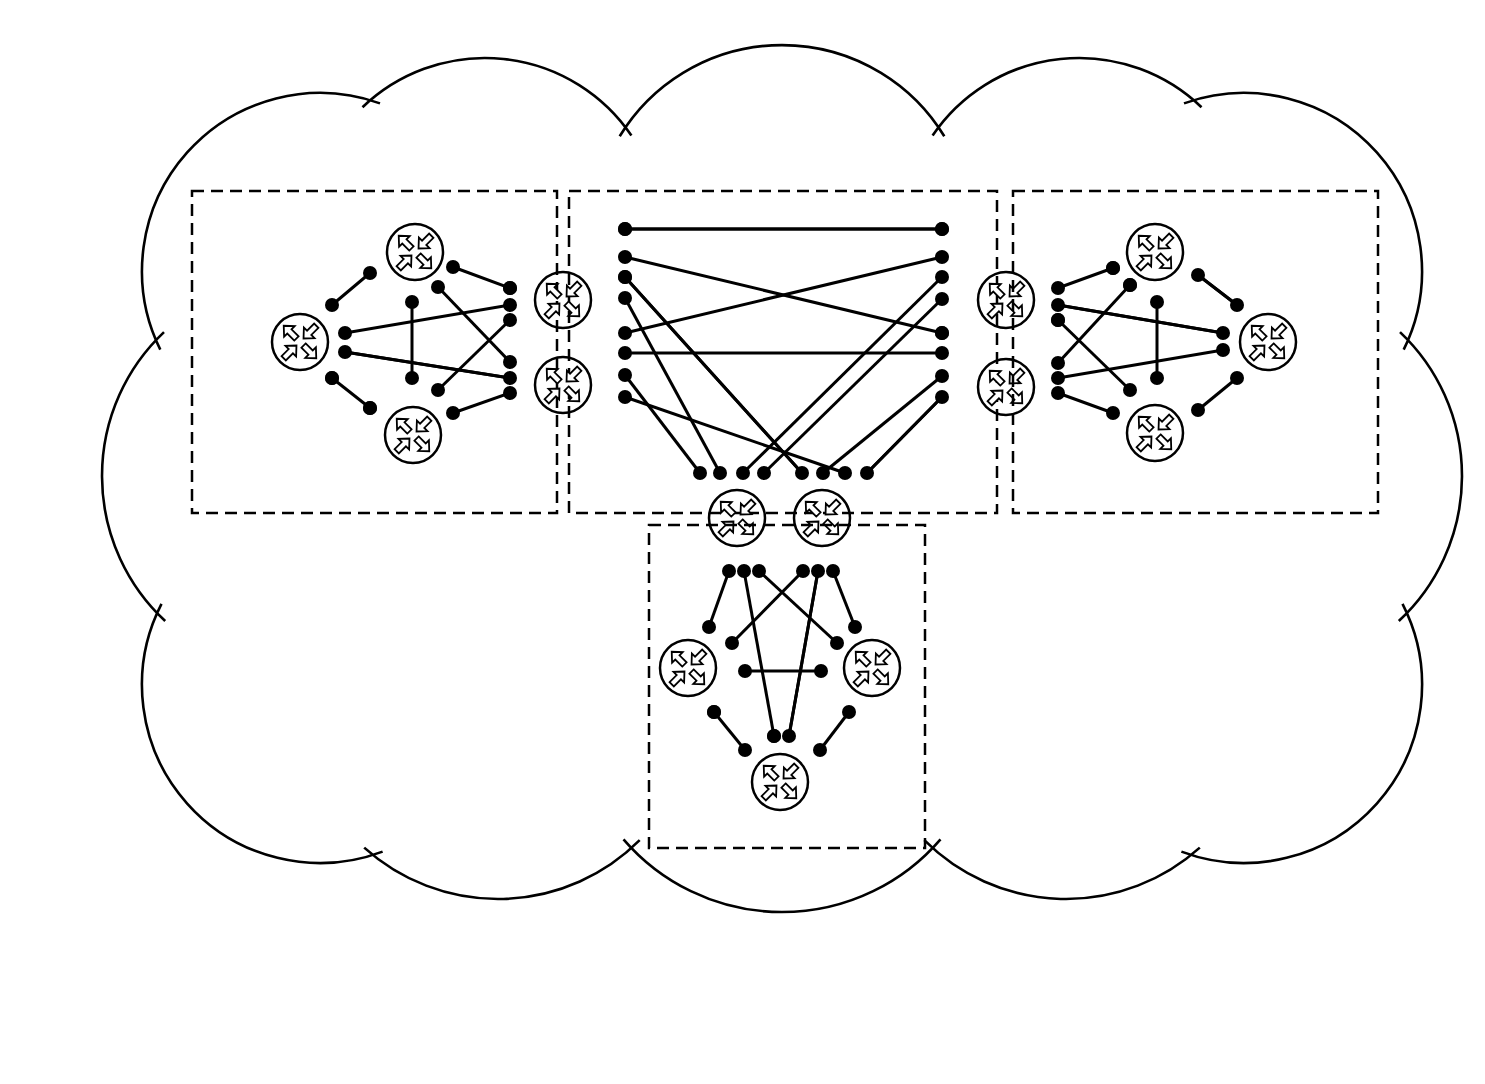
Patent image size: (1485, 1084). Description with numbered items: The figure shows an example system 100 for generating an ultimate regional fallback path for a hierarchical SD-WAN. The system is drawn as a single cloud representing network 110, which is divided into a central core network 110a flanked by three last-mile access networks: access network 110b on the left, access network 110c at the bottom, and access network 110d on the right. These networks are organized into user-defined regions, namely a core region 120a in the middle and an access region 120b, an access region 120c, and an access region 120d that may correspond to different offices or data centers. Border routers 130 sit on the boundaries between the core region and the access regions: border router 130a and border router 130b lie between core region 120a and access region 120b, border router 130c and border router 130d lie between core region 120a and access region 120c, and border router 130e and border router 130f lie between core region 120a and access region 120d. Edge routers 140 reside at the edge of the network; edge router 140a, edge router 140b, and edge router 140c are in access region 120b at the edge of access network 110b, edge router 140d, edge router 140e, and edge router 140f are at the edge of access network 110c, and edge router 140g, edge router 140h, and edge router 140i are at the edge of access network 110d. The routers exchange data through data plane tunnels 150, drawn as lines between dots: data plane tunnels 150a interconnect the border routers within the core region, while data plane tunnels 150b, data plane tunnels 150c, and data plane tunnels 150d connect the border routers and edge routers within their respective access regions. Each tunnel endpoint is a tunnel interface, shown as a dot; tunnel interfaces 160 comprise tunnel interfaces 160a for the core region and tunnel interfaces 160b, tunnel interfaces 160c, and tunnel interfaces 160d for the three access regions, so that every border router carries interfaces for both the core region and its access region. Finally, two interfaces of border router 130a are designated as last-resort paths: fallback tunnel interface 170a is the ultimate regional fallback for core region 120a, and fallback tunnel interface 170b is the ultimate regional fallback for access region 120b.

The system 100 is at (260, 58).
The network 110 is at (782, 478).
The core network 110a is at (783, 352).
The access network 110b is at (374, 352).
The access network 110c is at (787, 686).
The access network 110d is at (1195, 352).
The core region 120a is at (818, 190).
The access region 120b is at (402, 342).
The access region 120c is at (927, 599).
The access region 120d is at (1176, 341).
The border routers 130 is at (848, 537).
The border router 130a is at (573, 270).
The border router 130b is at (577, 413).
The border router 130c is at (703, 540).
The border router 130d is at (834, 571).
The border router 130e is at (1000, 415).
The border router 130f is at (1028, 277).
The edge routers 140 is at (670, 643).
The edge router 140a is at (295, 370).
The edge router 140b is at (432, 450).
The edge router 140c is at (387, 240).
The edge router 140d is at (810, 778).
The edge router 140e is at (900, 665).
The edge router 140f is at (660, 663).
The edge router 140g is at (1187, 242).
The edge router 140h is at (1268, 370).
The edge router 140i is at (1147, 462).
The data plane tunnels 150 is at (491, 288).
The data plane tunnels 150a is at (853, 423).
The data plane tunnels 150b is at (453, 373).
The data plane tunnels 150c is at (813, 600).
The data plane tunnels 150d is at (1190, 327).
The tunnel interfaces 160 is at (1113, 268).
The tunnel interfaces 160a is at (633, 277).
The tunnel interfaces 160b is at (332, 385).
The tunnel interfaces 160c is at (770, 737).
The tunnel interfaces 160d is at (1130, 292).
The fallback tunnel interface 170a is at (628, 218).
The fallback tunnel interface 170b is at (503, 283).